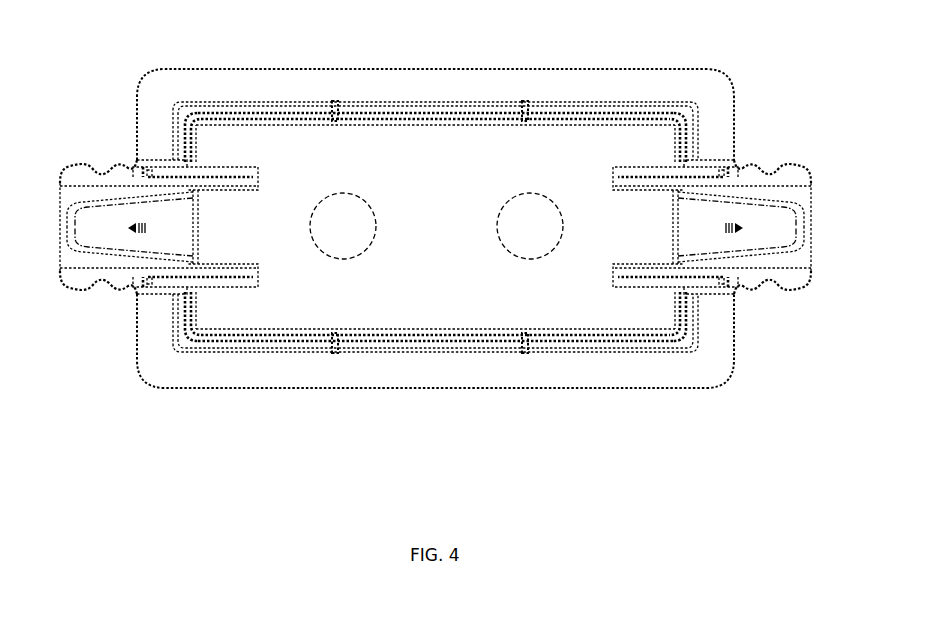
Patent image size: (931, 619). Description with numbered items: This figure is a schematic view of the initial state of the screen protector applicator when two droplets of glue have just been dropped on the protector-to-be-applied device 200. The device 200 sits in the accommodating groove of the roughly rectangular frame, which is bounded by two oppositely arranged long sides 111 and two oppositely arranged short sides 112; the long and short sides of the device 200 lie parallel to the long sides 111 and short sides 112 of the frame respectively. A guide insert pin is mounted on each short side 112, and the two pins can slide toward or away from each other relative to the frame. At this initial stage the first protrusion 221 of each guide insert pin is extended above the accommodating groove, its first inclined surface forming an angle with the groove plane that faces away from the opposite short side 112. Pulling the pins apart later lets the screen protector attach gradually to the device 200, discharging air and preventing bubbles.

The long side 111 is at (670, 372).
The short side 112 is at (722, 332).
The protector-to-be-applied device 200 is at (447, 313).
The first protrusion 221 is at (196, 135).